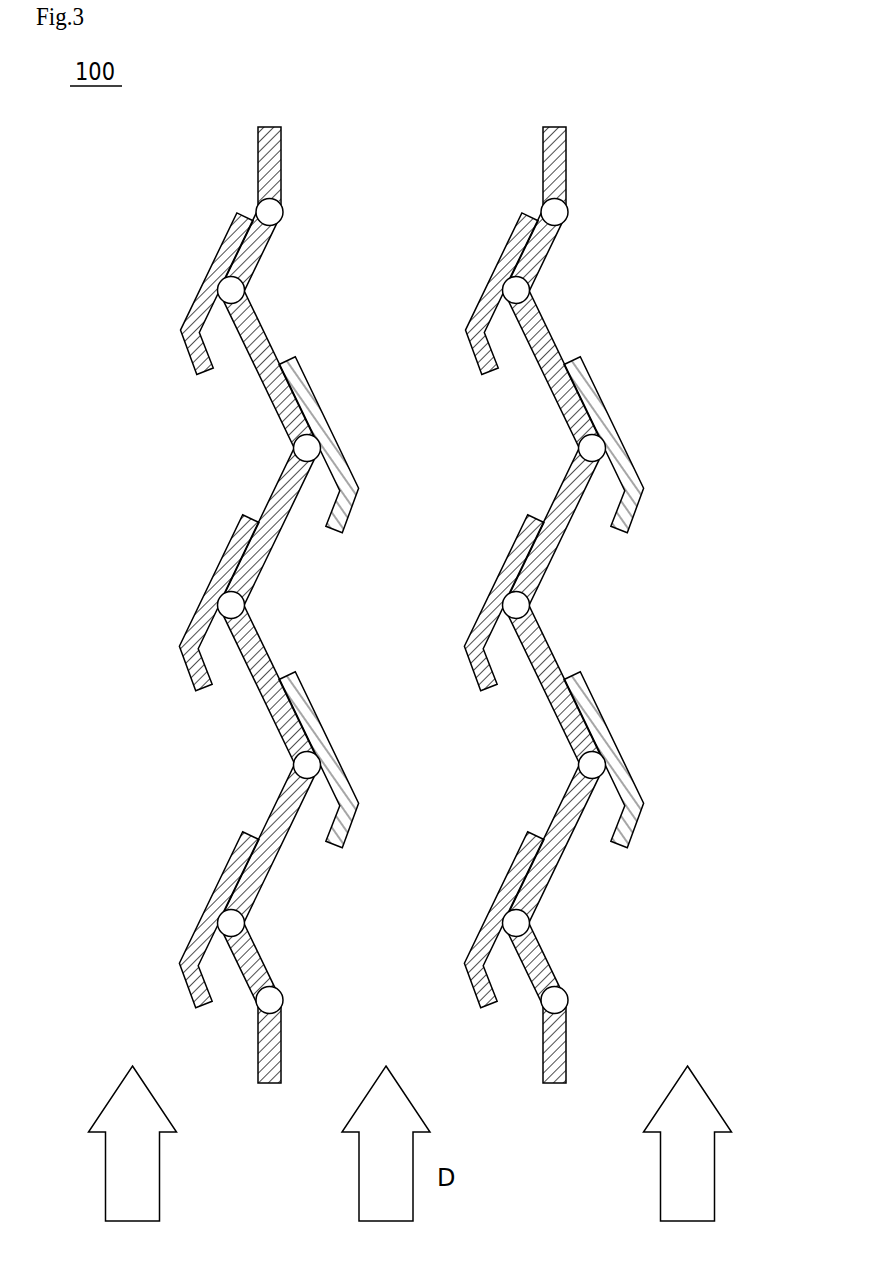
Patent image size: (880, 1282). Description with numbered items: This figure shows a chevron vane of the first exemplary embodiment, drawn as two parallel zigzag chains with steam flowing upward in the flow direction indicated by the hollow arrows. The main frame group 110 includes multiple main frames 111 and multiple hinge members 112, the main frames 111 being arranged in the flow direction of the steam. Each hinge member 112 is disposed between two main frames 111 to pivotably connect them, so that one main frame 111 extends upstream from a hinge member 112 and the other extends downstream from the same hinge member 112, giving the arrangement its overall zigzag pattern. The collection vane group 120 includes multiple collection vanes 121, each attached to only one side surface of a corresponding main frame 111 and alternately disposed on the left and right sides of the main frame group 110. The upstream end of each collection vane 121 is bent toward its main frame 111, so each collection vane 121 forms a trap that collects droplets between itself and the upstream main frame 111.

The main frame group 110 is at (248, 605).
The main frame 111 is at (266, 677).
The hinge member 112 is at (305, 448).
The collection vane group 120 is at (589, 605).
The collection vane 121 is at (595, 728).